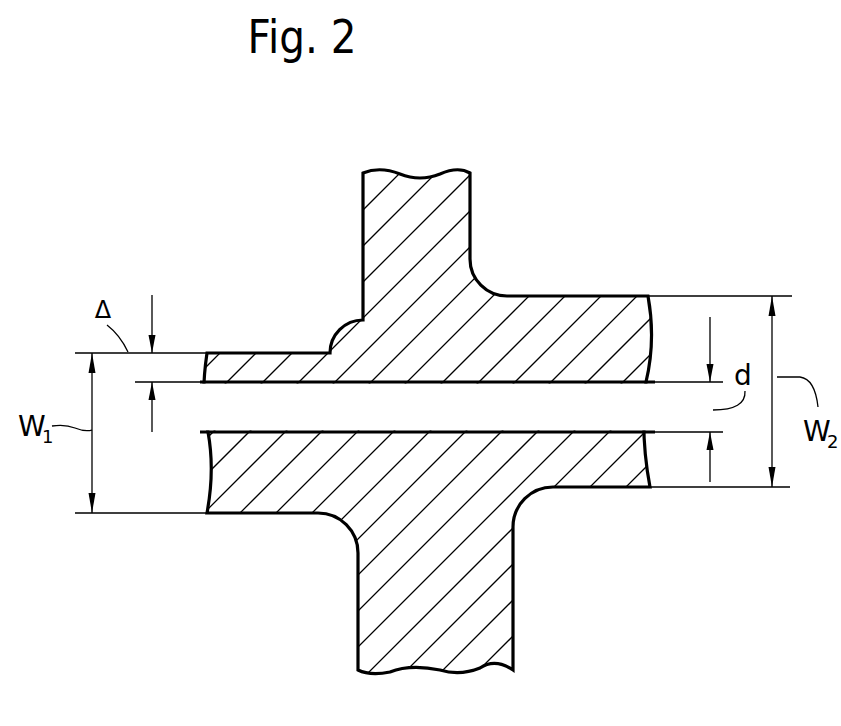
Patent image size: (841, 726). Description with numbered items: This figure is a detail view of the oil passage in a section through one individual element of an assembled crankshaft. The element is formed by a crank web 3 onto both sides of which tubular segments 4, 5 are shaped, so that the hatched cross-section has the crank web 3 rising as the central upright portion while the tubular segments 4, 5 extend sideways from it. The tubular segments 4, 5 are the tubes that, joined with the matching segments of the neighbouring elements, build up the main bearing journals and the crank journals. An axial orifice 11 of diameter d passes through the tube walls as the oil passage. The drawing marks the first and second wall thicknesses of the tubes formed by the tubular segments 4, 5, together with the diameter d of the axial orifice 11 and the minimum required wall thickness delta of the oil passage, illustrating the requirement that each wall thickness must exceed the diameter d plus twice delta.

The crank web 3 is at (423, 211).
The tubular segment 4 is at (583, 330).
The tubular segment 5 is at (272, 467).
The axial orifice 11 is at (442, 419).